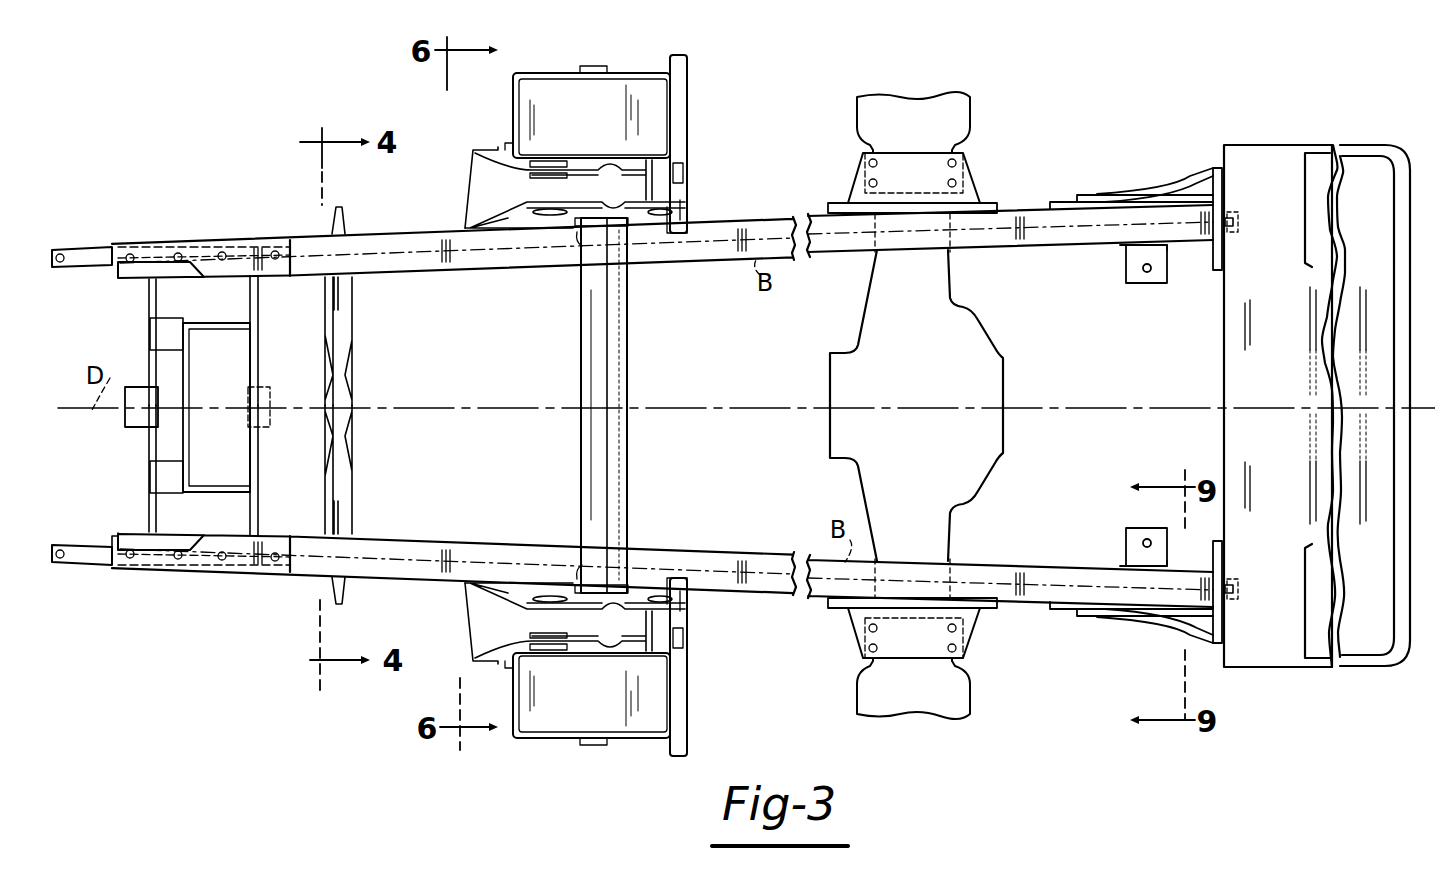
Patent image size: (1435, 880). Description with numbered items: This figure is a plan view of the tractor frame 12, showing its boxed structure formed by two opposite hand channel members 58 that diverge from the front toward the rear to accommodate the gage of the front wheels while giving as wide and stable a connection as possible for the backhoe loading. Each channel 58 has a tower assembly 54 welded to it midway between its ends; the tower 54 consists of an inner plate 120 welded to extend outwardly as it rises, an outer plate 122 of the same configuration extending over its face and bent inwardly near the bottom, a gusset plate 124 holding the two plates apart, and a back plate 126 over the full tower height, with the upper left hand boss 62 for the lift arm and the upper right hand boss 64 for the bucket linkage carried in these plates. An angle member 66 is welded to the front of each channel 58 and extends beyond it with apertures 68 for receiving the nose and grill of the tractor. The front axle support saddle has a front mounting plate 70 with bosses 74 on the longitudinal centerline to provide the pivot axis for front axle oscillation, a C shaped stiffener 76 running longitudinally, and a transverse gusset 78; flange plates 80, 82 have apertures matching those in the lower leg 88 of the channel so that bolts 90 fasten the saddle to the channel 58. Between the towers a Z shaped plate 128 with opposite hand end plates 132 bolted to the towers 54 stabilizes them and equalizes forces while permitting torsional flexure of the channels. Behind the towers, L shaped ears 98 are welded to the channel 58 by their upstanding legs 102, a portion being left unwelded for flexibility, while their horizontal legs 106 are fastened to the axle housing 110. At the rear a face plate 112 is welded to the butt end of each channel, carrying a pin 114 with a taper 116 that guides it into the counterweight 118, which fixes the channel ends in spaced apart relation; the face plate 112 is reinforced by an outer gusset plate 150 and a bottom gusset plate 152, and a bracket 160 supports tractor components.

The frame 12 is at (261, 210).
The tower assembly 54 is at (632, 755).
The structural channel member 58 is at (778, 556).
The upper left hand boss 62 is at (544, 653).
The upper right hand boss 64 is at (658, 648).
The angle member 66 is at (100, 566).
The apertures 68 is at (62, 570).
The front mounting plate 70 is at (148, 350).
The bosses 74 is at (133, 428).
The C shaped stiffener 76 is at (227, 452).
The gusset 78 is at (186, 434).
The flange plate 80 is at (122, 546).
The flange plate 82 is at (148, 243).
The lower leg of the frame channel 88 is at (170, 540).
The bolts 90 is at (273, 572).
The L shaped ears 98 is at (990, 652).
The upstanding leg 102 is at (977, 602).
The horizontal leg 106 is at (860, 620).
The axle housing 110 is at (1007, 380).
The face plate 112 is at (1225, 640).
The pin 114 is at (1232, 578).
The taper 116 is at (1234, 588).
The counterweight 118 is at (1358, 165).
The inner plate 120 is at (513, 590).
The outer plate 122 is at (490, 680).
The gusset plate 124 is at (490, 627).
The back plate 126 is at (692, 618).
The Z shaped plate 128 is at (628, 444).
The end plates 132 is at (636, 556).
The outer gusset plate 150 is at (1117, 615).
The bottom gusset plate 152 is at (1198, 625).
The bracket 160 is at (1124, 540).